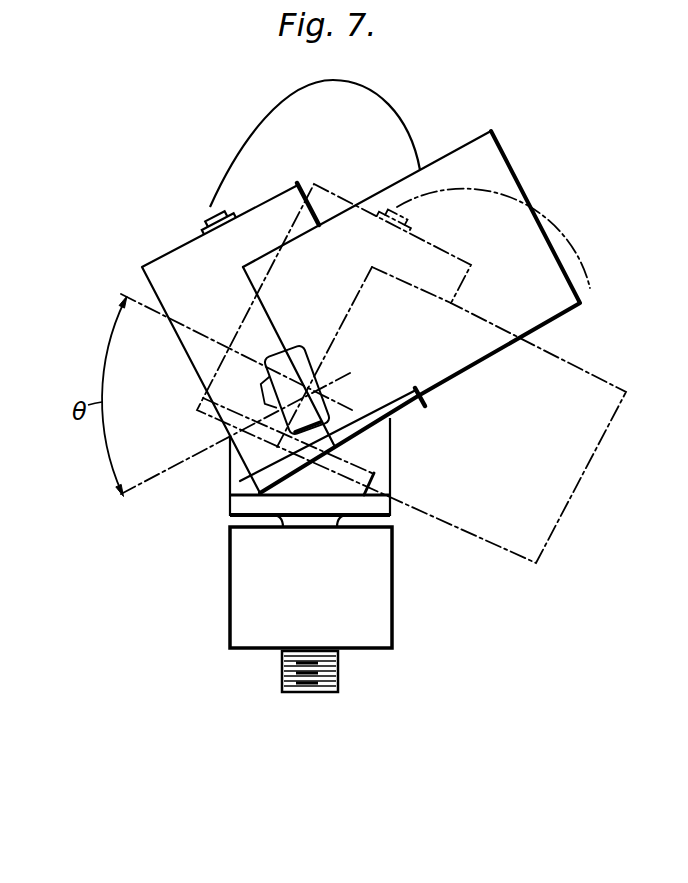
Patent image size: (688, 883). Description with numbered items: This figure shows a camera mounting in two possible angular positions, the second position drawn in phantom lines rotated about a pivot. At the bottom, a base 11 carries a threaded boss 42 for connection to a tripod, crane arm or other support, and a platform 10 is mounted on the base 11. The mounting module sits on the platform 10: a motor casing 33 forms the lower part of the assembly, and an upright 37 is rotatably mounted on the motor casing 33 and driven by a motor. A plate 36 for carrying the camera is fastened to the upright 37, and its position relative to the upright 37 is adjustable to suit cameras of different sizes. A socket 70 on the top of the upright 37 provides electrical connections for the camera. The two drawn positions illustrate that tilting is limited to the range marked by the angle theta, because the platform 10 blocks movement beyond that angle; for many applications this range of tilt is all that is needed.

The socket 70 is at (226, 212).
The upright 37 is at (302, 186).
The plate 36 is at (426, 400).
The motor casing 33 is at (238, 482).
The platform 10 is at (250, 508).
The base 11 is at (384, 584).
The threaded boss 42 is at (284, 683).